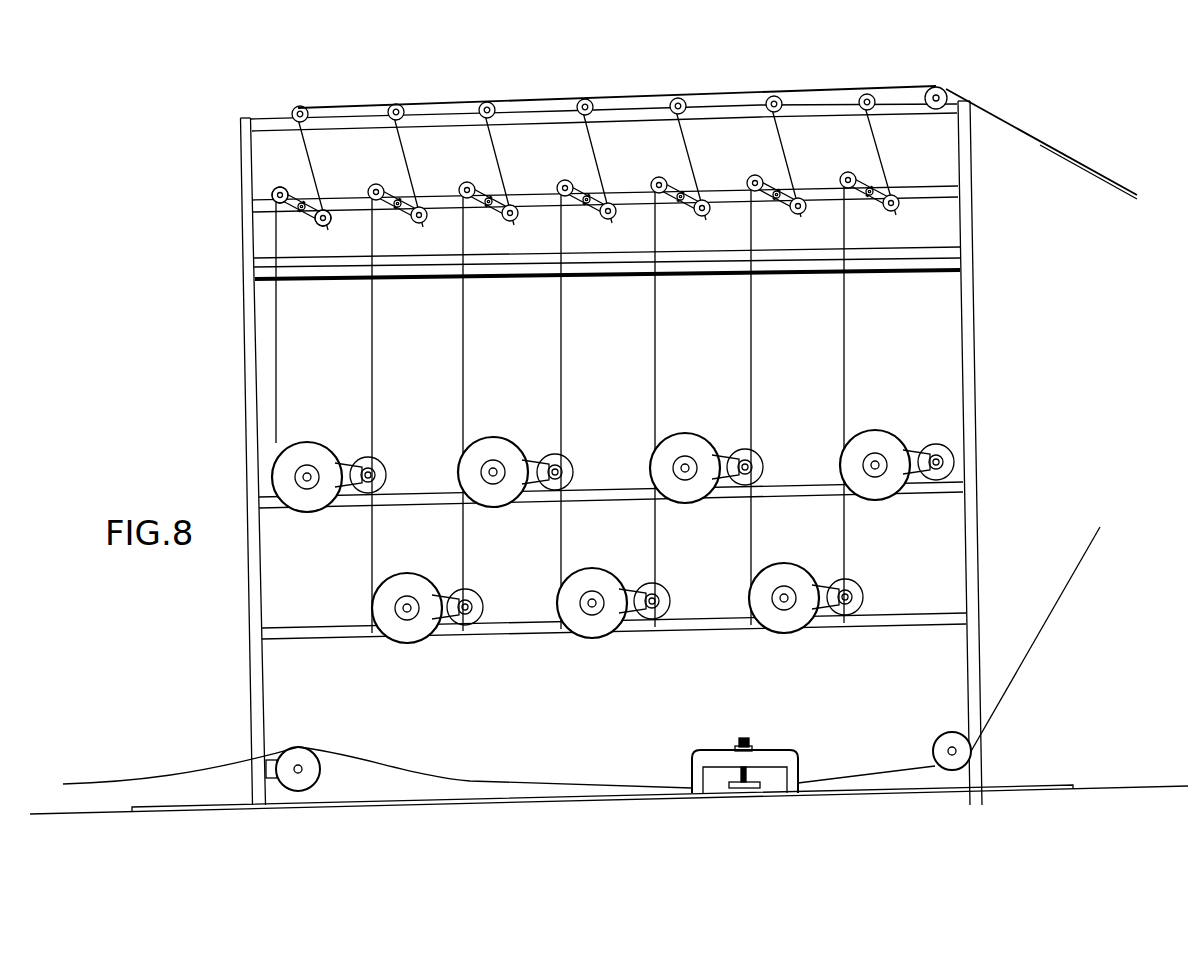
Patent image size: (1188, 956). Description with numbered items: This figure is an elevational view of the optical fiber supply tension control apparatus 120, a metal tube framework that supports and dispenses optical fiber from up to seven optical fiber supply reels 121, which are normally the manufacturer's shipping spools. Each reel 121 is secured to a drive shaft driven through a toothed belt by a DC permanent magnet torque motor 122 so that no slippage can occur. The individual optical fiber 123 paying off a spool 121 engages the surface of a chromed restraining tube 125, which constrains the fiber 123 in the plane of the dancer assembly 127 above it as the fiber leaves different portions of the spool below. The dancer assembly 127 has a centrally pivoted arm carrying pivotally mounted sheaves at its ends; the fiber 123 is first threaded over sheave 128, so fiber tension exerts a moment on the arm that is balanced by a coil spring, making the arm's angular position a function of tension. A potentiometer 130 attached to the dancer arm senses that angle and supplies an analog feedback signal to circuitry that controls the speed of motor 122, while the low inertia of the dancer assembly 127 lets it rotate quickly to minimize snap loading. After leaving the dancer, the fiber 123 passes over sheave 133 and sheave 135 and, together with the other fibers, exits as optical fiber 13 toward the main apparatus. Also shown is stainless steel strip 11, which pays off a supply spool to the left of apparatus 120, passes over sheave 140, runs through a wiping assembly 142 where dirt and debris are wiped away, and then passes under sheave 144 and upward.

The stainless steel strip 11 is at (395, 767).
The optical fiber 13 is at (1100, 181).
The apparatus 120 is at (248, 434).
The optical fiber supply reel 121 is at (320, 507).
The DC permanent magnet torque motor 122 is at (388, 472).
The optical fiber 123 is at (278, 415).
The chromed restraining tube 125 is at (422, 273).
The dancer assembly 127 is at (310, 190).
The sheave 128 is at (280, 188).
The potentiometer 130 is at (302, 216).
The sheave 133 is at (307, 123).
The sheave 135 is at (937, 110).
The sheave 140 is at (317, 775).
The wiping assembly 142 is at (708, 748).
The sheave 144 is at (942, 740).